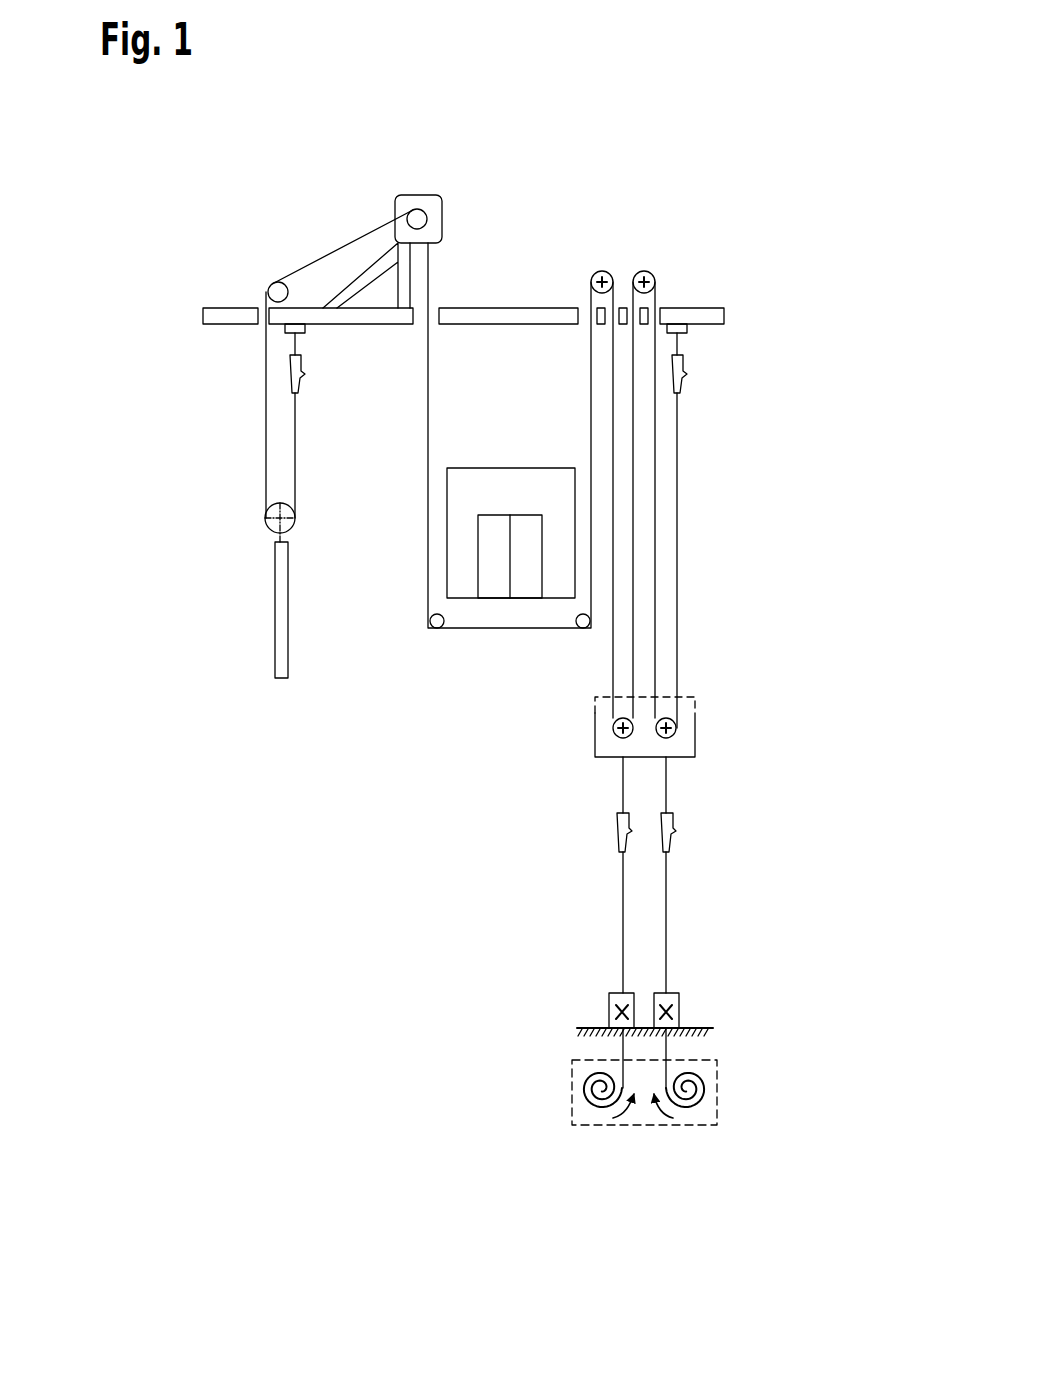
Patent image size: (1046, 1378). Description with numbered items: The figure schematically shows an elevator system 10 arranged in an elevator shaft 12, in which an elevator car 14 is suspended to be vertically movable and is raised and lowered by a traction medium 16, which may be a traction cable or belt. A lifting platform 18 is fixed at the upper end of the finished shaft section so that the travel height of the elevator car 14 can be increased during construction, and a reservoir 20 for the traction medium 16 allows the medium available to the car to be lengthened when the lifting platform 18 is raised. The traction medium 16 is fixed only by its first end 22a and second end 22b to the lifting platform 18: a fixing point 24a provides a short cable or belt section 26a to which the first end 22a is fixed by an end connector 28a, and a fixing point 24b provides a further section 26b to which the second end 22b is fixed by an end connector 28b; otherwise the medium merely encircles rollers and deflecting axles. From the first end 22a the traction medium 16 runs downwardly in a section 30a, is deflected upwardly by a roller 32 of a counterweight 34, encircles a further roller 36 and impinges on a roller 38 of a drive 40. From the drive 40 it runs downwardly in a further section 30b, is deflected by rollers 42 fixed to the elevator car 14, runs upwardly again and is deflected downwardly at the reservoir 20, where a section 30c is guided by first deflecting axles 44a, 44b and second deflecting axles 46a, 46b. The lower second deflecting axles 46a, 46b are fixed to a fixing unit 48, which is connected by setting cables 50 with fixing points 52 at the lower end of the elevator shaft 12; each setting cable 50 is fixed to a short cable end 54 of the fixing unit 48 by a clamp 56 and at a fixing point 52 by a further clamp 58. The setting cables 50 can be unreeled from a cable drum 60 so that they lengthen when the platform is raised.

The elevator system 10 is at (745, 186).
The elevator shaft 12 is at (345, 796).
The elevator car 14 is at (497, 468).
The traction medium 16 is at (678, 543).
The lifting platform 18 is at (718, 316).
The reservoir 20 is at (825, 483).
The first end 22a is at (322, 356).
The second end 22b is at (708, 363).
The fixing point 24a is at (306, 328).
The fixing point 24b is at (688, 328).
The cable section or belt section 26a is at (292, 344).
The cable section or belt section 26b is at (680, 343).
The end connector 28a is at (304, 380).
The end connector 28b is at (686, 380).
The section 30a is at (352, 488).
The further section 30b is at (476, 688).
The section 30c is at (805, 618).
The roller 32 is at (268, 533).
The counterweight 34 is at (275, 610).
The further roller 36 is at (266, 284).
The roller 38 is at (420, 208).
The drive 40 is at (428, 219).
The rollers 42 is at (432, 630).
The first deflecting axle 44a is at (602, 270).
The first deflecting axle 44b is at (644, 270).
The second deflecting axle 46a is at (612, 728).
The second deflecting axle 46b is at (677, 728).
The fixing unit 48 is at (688, 740).
The setting cable 50 is at (622, 903).
The fixing point 52 is at (598, 1010).
The cable end 54 is at (622, 792).
The clamp 56 is at (616, 834).
The clamp 58 is at (609, 1024).
The cable drum 60 is at (600, 1109).